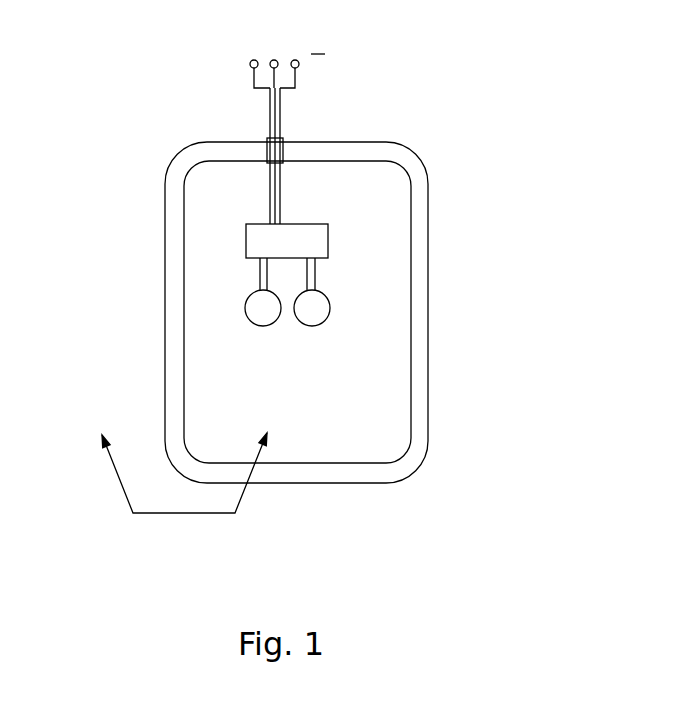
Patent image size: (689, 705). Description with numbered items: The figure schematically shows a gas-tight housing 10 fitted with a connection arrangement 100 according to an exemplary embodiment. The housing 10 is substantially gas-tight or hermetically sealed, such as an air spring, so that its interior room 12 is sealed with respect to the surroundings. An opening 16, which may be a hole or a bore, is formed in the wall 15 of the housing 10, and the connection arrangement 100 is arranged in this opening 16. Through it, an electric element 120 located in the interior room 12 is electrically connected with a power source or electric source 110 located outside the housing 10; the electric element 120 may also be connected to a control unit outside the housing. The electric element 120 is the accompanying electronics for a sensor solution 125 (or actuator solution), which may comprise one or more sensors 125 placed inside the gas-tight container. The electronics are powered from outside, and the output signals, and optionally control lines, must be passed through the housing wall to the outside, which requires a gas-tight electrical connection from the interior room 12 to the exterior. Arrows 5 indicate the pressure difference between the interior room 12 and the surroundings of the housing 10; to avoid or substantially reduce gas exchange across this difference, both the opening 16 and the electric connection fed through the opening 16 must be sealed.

The arrows 5 is at (172, 513).
The housing 10 is at (393, 147).
The interior room 12 is at (357, 421).
The wall 15 is at (422, 367).
The opening 16 is at (290, 173).
The connection arrangement 100 is at (267, 150).
The electric source 110 is at (297, 77).
The electric element 120 is at (231, 243).
The sensors 125 is at (320, 293).